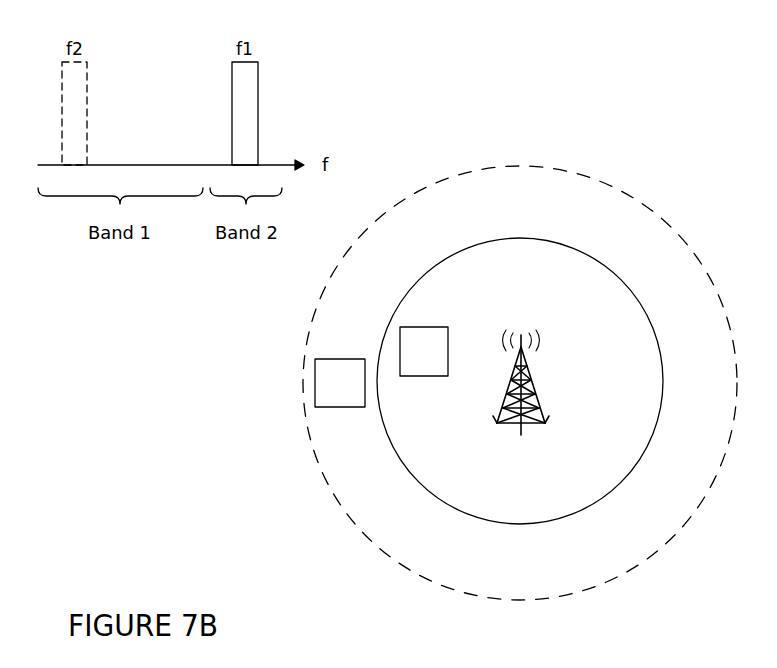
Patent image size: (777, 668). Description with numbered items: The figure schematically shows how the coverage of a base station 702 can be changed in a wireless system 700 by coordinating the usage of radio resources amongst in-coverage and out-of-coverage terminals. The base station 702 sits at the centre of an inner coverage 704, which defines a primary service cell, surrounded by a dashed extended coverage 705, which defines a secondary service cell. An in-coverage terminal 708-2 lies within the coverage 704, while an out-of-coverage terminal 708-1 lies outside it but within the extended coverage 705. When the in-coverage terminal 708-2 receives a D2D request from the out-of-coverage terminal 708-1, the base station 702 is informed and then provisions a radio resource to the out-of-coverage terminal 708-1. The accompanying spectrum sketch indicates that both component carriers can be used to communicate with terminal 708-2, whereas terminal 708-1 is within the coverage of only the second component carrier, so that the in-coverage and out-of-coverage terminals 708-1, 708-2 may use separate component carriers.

The wireless communication system 700 is at (612, 135).
The base station 702 is at (533, 393).
The coverage 704 is at (580, 252).
The extended coverage 705 is at (652, 208).
The out-of-coverage terminal 708-1 is at (315, 372).
The in-coverage terminal 708-2 is at (425, 327).